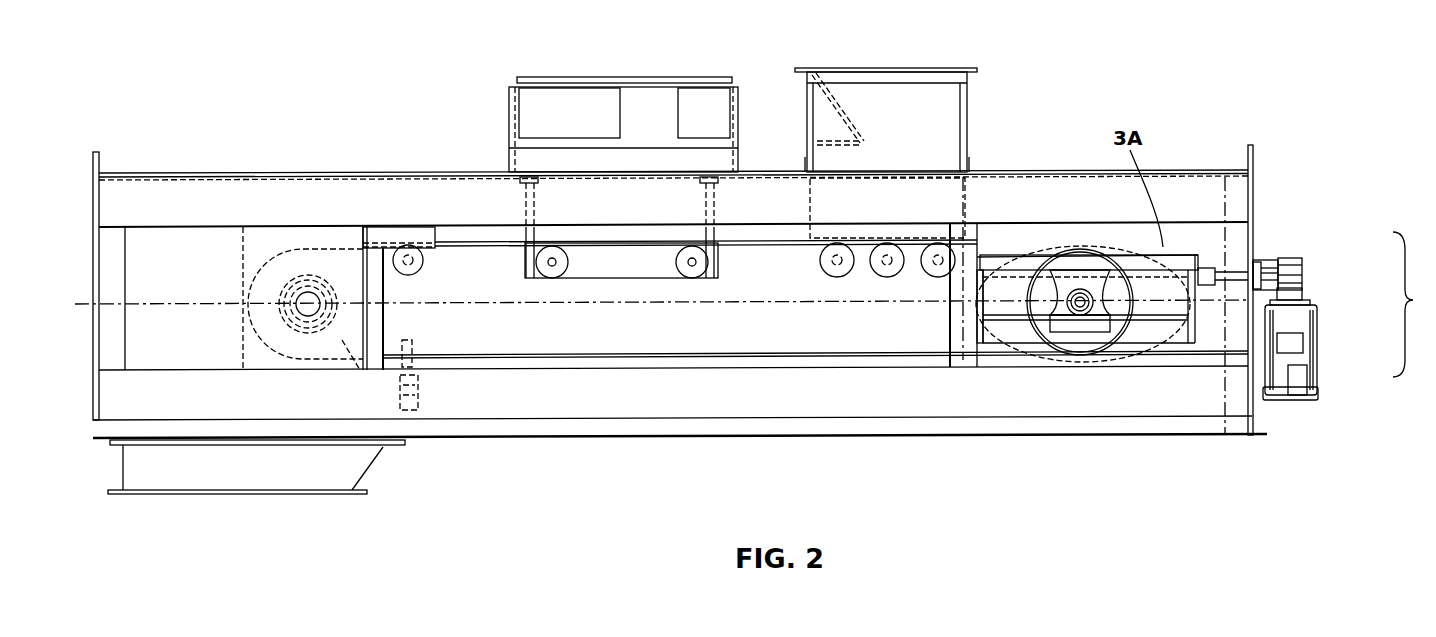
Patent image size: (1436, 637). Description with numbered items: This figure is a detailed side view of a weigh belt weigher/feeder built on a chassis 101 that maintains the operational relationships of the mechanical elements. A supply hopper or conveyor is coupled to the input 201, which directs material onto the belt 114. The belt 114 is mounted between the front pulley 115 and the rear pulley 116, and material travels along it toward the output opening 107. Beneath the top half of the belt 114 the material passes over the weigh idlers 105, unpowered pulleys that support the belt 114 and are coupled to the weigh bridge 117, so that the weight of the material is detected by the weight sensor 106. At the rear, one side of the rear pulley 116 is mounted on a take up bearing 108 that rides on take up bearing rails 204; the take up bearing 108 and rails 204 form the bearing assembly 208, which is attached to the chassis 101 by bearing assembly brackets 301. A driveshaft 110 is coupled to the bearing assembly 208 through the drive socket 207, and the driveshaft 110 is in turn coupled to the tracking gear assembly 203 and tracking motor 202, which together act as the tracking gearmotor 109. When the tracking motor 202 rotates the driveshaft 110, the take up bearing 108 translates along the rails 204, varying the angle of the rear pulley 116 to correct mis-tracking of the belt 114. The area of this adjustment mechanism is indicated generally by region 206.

The chassis 101 is at (138, 173).
The weigh idlers 105 is at (556, 279).
The weight sensor 106 is at (518, 82).
The output opening 107 is at (120, 470).
The take up bearing 108 is at (1073, 326).
The tracking gearmotor 109 is at (1391, 319).
The driveshaft 110 is at (1258, 248).
The belt 114 is at (990, 243).
The front pulley 115 is at (353, 357).
The rear pulley 116 is at (1090, 247).
The weigh bridge 117 is at (525, 226).
The input 201 is at (890, 68).
The tracking motor 202 is at (1317, 347).
The tracking gear assembly 203 is at (1300, 263).
The take up bearing rails 204 is at (1018, 256).
The region 206 is at (1177, 230).
The drive socket 207 is at (1213, 273).
The bearing assembly 208 is at (1138, 253).
The bearing assembly brackets 301 is at (967, 337).